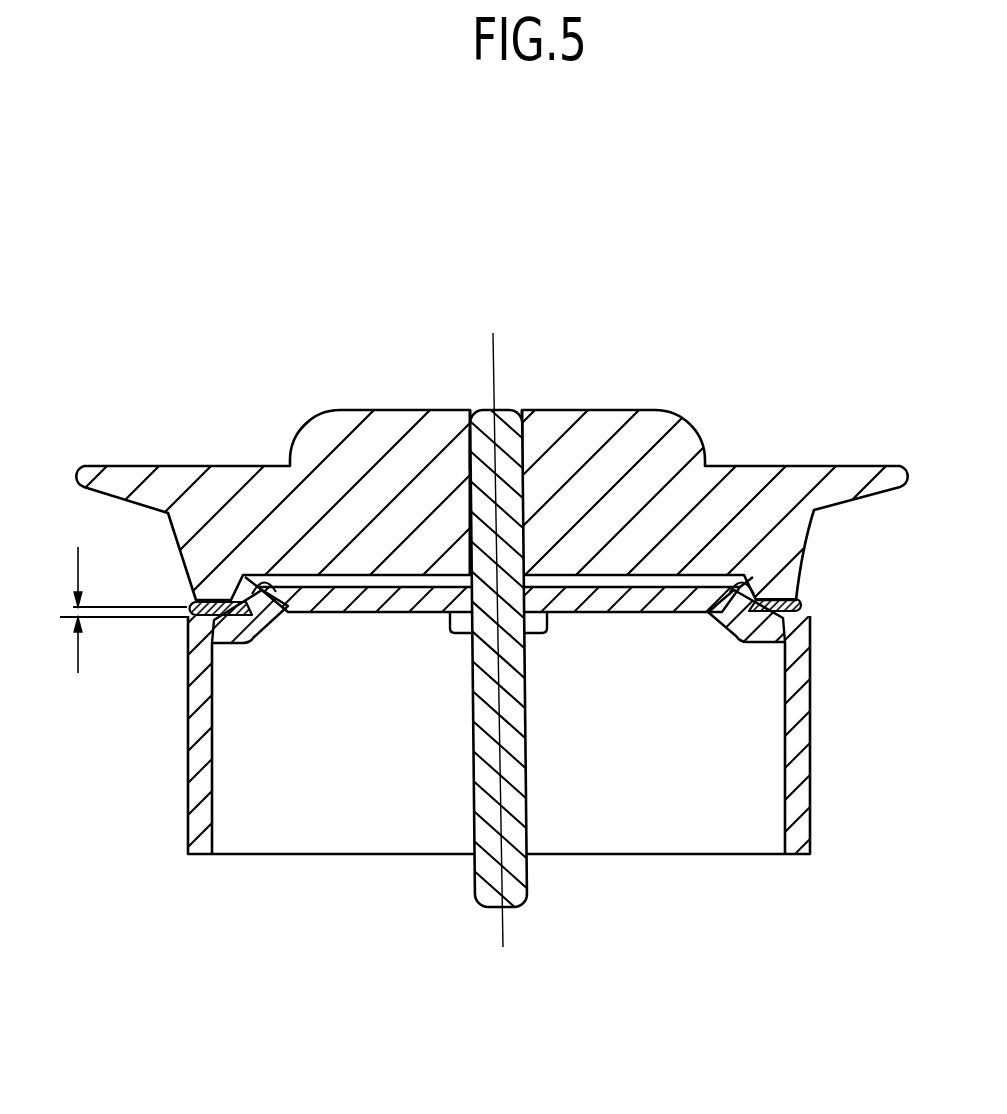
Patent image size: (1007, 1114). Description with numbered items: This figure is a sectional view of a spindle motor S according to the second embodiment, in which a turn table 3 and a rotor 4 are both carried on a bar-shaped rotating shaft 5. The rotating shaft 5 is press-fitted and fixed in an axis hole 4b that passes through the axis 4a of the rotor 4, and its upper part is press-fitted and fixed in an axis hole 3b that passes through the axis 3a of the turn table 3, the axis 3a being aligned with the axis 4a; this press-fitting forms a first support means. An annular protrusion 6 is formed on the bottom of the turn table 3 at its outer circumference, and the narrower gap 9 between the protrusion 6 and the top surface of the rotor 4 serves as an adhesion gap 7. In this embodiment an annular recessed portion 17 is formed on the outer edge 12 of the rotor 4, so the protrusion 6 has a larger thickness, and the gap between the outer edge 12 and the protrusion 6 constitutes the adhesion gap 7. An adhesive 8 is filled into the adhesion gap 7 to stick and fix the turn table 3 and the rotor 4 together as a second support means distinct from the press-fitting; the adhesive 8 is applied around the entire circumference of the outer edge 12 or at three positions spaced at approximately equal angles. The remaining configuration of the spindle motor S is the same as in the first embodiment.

The turn table 3 is at (590, 418).
The axis 3a is at (492, 400).
The axis hole 3b is at (470, 462).
The rotor 4 is at (803, 745).
The axis 4a is at (500, 368).
The axis hole 4b is at (546, 624).
The rotating shaft 5 is at (520, 880).
The annular protrusion 6 is at (196, 592).
The adhesion gap 7 is at (108, 610).
The adhesive 8 is at (803, 604).
The gap 9 is at (364, 594).
The outer edge 12 is at (812, 640).
The annular recessed portion 17 is at (258, 612).
The spindle motor S is at (845, 591).